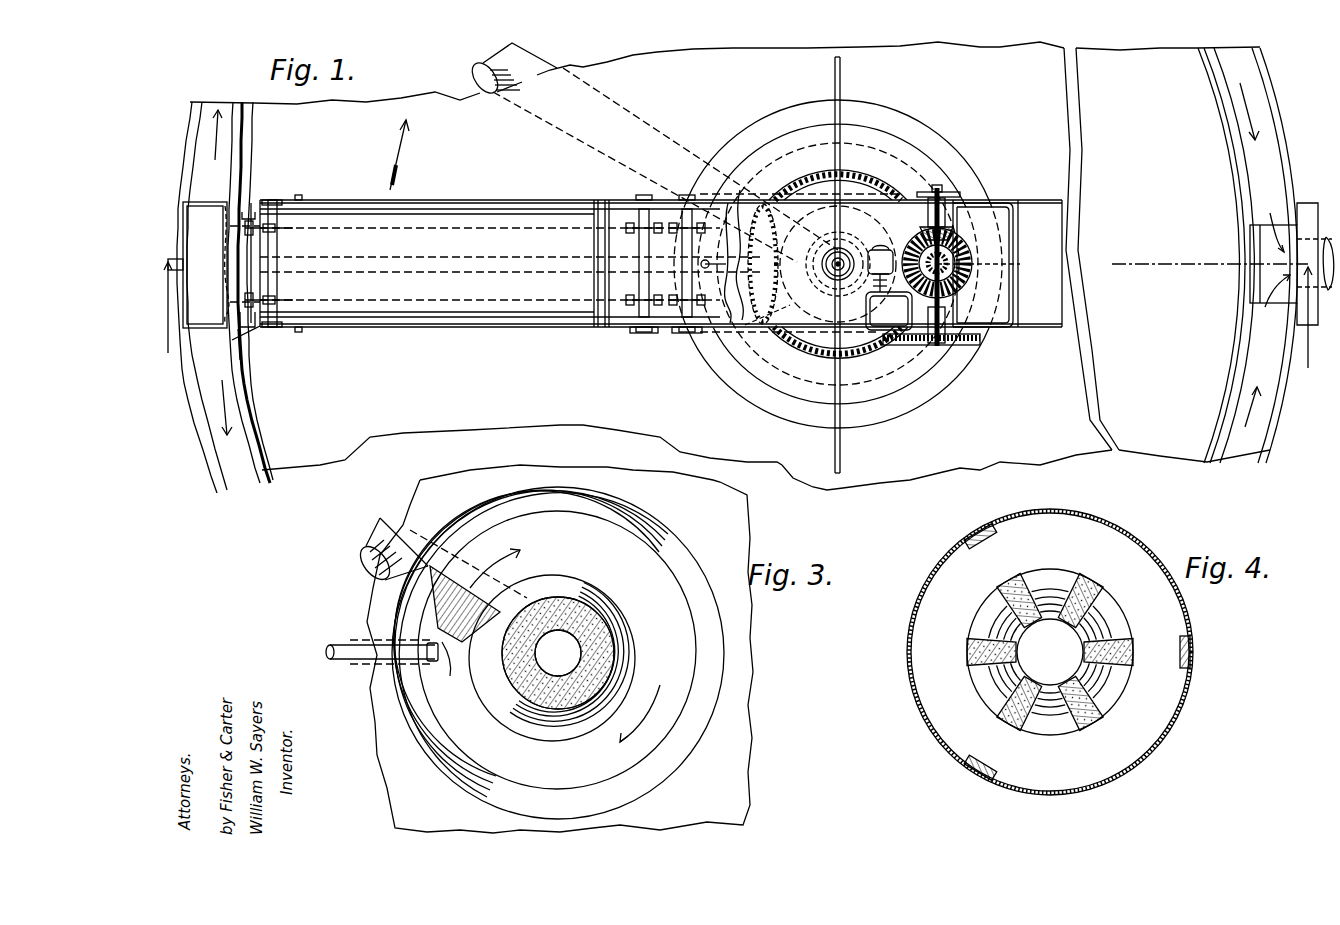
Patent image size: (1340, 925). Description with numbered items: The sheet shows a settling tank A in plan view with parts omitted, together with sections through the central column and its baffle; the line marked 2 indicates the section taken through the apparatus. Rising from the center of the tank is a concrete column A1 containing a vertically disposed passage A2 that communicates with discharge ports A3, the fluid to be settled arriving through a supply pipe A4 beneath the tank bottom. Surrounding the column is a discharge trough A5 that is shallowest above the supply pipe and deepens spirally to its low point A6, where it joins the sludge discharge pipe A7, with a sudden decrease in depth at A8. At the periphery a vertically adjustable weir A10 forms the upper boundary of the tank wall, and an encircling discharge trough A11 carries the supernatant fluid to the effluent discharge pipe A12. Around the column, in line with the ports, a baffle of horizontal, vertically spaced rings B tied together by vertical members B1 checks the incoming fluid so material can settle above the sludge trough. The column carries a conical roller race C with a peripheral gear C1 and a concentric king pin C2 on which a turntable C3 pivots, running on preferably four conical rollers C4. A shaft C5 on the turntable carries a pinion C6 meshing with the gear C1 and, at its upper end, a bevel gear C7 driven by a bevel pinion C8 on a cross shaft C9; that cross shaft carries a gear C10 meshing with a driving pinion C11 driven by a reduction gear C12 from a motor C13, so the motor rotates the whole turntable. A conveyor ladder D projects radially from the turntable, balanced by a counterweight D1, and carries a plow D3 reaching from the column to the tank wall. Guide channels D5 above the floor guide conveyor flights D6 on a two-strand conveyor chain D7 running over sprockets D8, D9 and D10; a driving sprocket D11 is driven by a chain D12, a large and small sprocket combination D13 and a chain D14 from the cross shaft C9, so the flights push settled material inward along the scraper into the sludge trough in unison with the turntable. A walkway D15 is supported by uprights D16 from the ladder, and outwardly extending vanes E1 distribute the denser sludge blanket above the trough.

In FIG. 1, the settling tank A is at (737, 274).
In FIG. 3, the settling tank A is at (750, 742).
In FIG. 1, the column A1 is at (883, 226).
In FIG. 3, the column A1 is at (619, 639).
In FIG. 4, the column A1 is at (1096, 720).
In FIG. 1, the vertically disposed passage A2 is at (862, 233).
In FIG. 3, the vertically disposed passage A2 is at (558, 653).
In FIG. 4, the vertically disposed passage A2 is at (1050, 652).
In FIG. 4, the discharge ports A3 is at (1063, 577).
In FIG. 1, the supply pipe A4 is at (476, 68).
In FIG. 3, the supply pipe A4 is at (394, 525).
In FIG. 1, the discharge trough A5 is at (763, 113).
In FIG. 3, the discharge trough A5 is at (726, 637).
In FIG. 3, the low point of trough A6 is at (427, 636).
In FIG. 1, the discharge pipe A7 is at (428, 262).
In FIG. 3, the discharge pipe A7 is at (345, 664).
In FIG. 1, the sudden decrease in depth A8 is at (734, 208).
In FIG. 3, the sudden decrease in depth A8 is at (443, 611).
In FIG. 1, the weir A10 is at (248, 137).
In FIG. 1, the discharge trough A11 is at (212, 432).
In FIG. 1, the effluent discharge pipe A12 is at (1327, 240).
In FIG. 1, the rings B is at (794, 174).
In FIG. 4, the rings B is at (1183, 717).
In FIG. 4, the vertical members B1 is at (987, 532).
In FIG. 1, the conical roller race C is at (816, 172).
In FIG. 1, the gear C1 is at (856, 172).
In FIG. 1, the king pin C2 is at (850, 256).
In FIG. 1, the turntable C3 is at (823, 322).
In FIG. 1, the conical rollers C4 is at (922, 382).
In FIG. 1, the shaft C5 is at (986, 249).
In FIG. 1, the pinion C6 is at (1008, 270).
In FIG. 1, the bevel gear C7 is at (956, 288).
In FIG. 1, the bevel pinion C8 is at (943, 231).
In FIG. 1, the cross shaft C9 is at (944, 226).
In FIG. 1, the gear C10 is at (968, 346).
In FIG. 1, the driving pinion C11 is at (895, 346).
In FIG. 1, the reduction gear C12 is at (889, 311).
In FIG. 1, the motor C13 is at (866, 278).
In FIG. 1, the conveyor ladder D is at (620, 206).
In FIG. 1, the counterweight D1 is at (1035, 204).
In FIG. 1, the plow D3 is at (250, 332).
In FIG. 1, the guide channels D5 is at (490, 322).
In FIG. 1, the conveyor flights D6 is at (246, 246).
In FIG. 1, the conveyor chain D7 is at (363, 226).
In FIG. 1, the sprocket D8 is at (676, 225).
In FIG. 1, the sprocket D9 is at (287, 227).
In FIG. 1, the sprocket D10 is at (631, 220).
In FIG. 1, the driving sprocket D11 is at (660, 338).
In FIG. 1, the chain D12 is at (683, 336).
In FIG. 1, the large and small sprocket combination D13 is at (766, 340).
In FIG. 1, the chain D14 is at (936, 186).
In FIG. 1, the walkway D15 is at (205, 215).
In FIG. 1, the upright D16 is at (300, 196).
In FIG. 1, the vanes E1 is at (835, 72).
In FIG. 1, the section line 2 is at (737, 330).